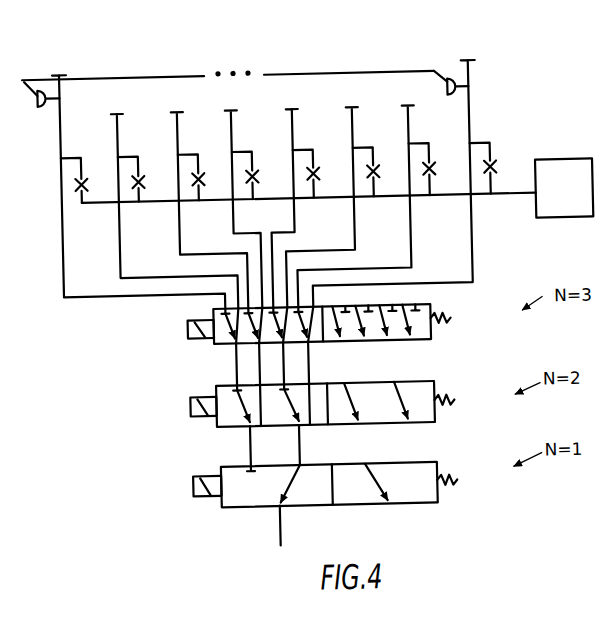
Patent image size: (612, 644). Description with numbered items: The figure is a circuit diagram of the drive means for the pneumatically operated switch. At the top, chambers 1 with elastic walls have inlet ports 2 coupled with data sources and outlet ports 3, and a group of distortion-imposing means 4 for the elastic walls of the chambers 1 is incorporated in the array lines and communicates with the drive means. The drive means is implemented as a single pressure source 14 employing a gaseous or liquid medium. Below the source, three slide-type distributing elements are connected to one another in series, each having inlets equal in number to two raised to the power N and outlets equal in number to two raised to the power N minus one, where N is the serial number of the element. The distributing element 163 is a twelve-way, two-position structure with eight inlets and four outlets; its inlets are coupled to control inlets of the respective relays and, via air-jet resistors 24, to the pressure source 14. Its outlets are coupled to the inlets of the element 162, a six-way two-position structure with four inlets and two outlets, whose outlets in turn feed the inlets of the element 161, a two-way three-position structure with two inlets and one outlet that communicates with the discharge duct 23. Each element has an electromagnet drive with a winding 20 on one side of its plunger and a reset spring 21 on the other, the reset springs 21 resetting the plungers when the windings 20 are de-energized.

The chamber 1 is at (46, 102).
The inlet port 2 is at (41, 103).
The outlet port 3 is at (245, 97).
The distortion-imposing means 4 is at (355, 222).
The pressure source 14 is at (564, 187).
The distributing element 163 is at (434, 307).
The distributing element 162 is at (431, 383).
The distributing element 161 is at (432, 465).
The electromagnet winding 20 is at (186, 328).
The reset spring 21 is at (449, 321).
The discharge duct 23 is at (274, 535).
The air-jet resistor 24 is at (259, 168).